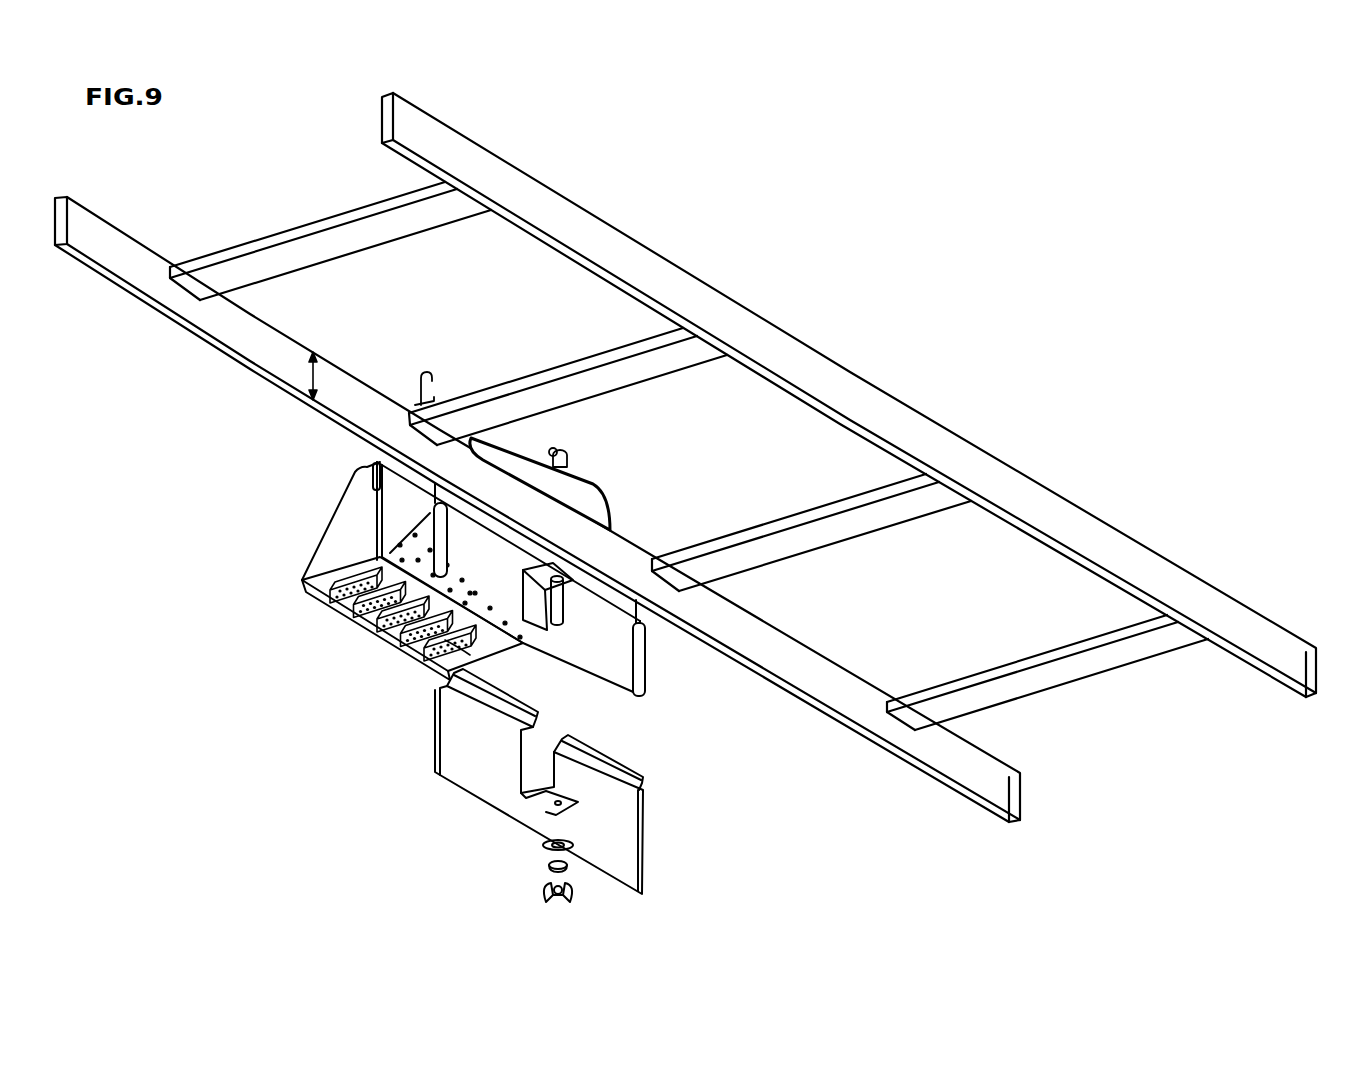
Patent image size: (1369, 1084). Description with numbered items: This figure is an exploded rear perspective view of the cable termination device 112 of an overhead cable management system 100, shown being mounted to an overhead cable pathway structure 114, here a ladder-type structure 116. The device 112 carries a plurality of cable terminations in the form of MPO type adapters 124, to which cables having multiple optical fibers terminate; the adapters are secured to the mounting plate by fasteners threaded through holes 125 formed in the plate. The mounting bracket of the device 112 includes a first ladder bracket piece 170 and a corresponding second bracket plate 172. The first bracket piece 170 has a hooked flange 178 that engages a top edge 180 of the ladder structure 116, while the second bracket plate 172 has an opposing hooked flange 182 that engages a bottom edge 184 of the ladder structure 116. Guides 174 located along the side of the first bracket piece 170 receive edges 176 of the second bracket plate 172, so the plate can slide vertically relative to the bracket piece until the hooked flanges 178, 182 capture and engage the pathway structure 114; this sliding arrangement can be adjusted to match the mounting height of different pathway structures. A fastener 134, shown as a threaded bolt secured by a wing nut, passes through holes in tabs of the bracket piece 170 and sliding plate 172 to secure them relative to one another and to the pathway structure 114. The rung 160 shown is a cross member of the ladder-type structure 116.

The overhead cable management system 100 is at (685, 457).
The cable termination panel or device 112 is at (357, 571).
The overhead cable pathway structure 114 is at (993, 402).
The ladder-type structure 116 is at (840, 366).
The MPO type adapters 124 is at (374, 627).
The holes 125 is at (473, 638).
The fastener 134 is at (563, 606).
The rung 160 is at (676, 214).
The first ladder bracket piece 170 is at (601, 672).
The second bracket plate 172 is at (533, 785).
The guides 174 is at (440, 549).
The edges 176 is at (437, 734).
The hooked flange 178 is at (565, 492).
The top edge 180 is at (629, 540).
The opposing hooked flange 182 is at (493, 698).
The bottom edge 184 is at (537, 543).